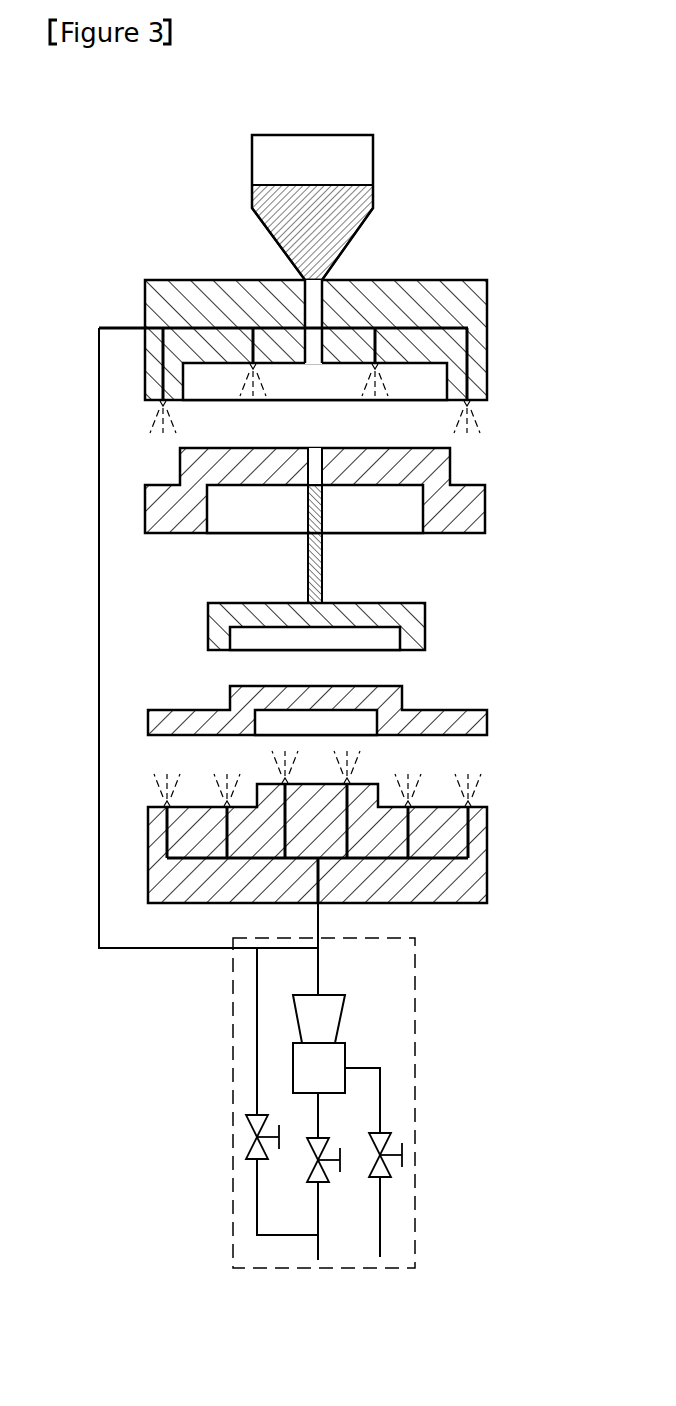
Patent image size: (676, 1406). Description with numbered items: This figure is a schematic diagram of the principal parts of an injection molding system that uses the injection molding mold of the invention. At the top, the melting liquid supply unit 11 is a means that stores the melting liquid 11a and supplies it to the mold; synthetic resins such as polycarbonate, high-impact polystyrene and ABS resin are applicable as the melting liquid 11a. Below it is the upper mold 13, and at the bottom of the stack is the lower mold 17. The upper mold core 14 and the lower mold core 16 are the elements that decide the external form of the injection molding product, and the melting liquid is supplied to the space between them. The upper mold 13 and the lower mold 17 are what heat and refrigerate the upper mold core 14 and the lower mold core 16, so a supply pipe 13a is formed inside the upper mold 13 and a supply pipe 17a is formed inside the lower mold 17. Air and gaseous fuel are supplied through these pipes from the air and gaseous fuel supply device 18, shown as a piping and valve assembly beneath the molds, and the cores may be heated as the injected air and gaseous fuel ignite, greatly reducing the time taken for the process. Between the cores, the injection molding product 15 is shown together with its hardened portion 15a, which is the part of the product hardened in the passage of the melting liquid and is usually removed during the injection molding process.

The melting liquid supply unit 11 is at (312, 135).
The melting liquid 11a is at (364, 198).
The upper mold 13 is at (432, 280).
The supply pipe 13a is at (470, 337).
The upper mold core 14 is at (487, 498).
The injection molding product 15 is at (425, 627).
The hardened portion of injection molding product 15a is at (323, 574).
The lower mold core 16 is at (487, 710).
The lower mold 17 is at (488, 876).
The supply pipe 17a is at (470, 833).
The air and gaseous fuel supply device 18 is at (415, 1070).